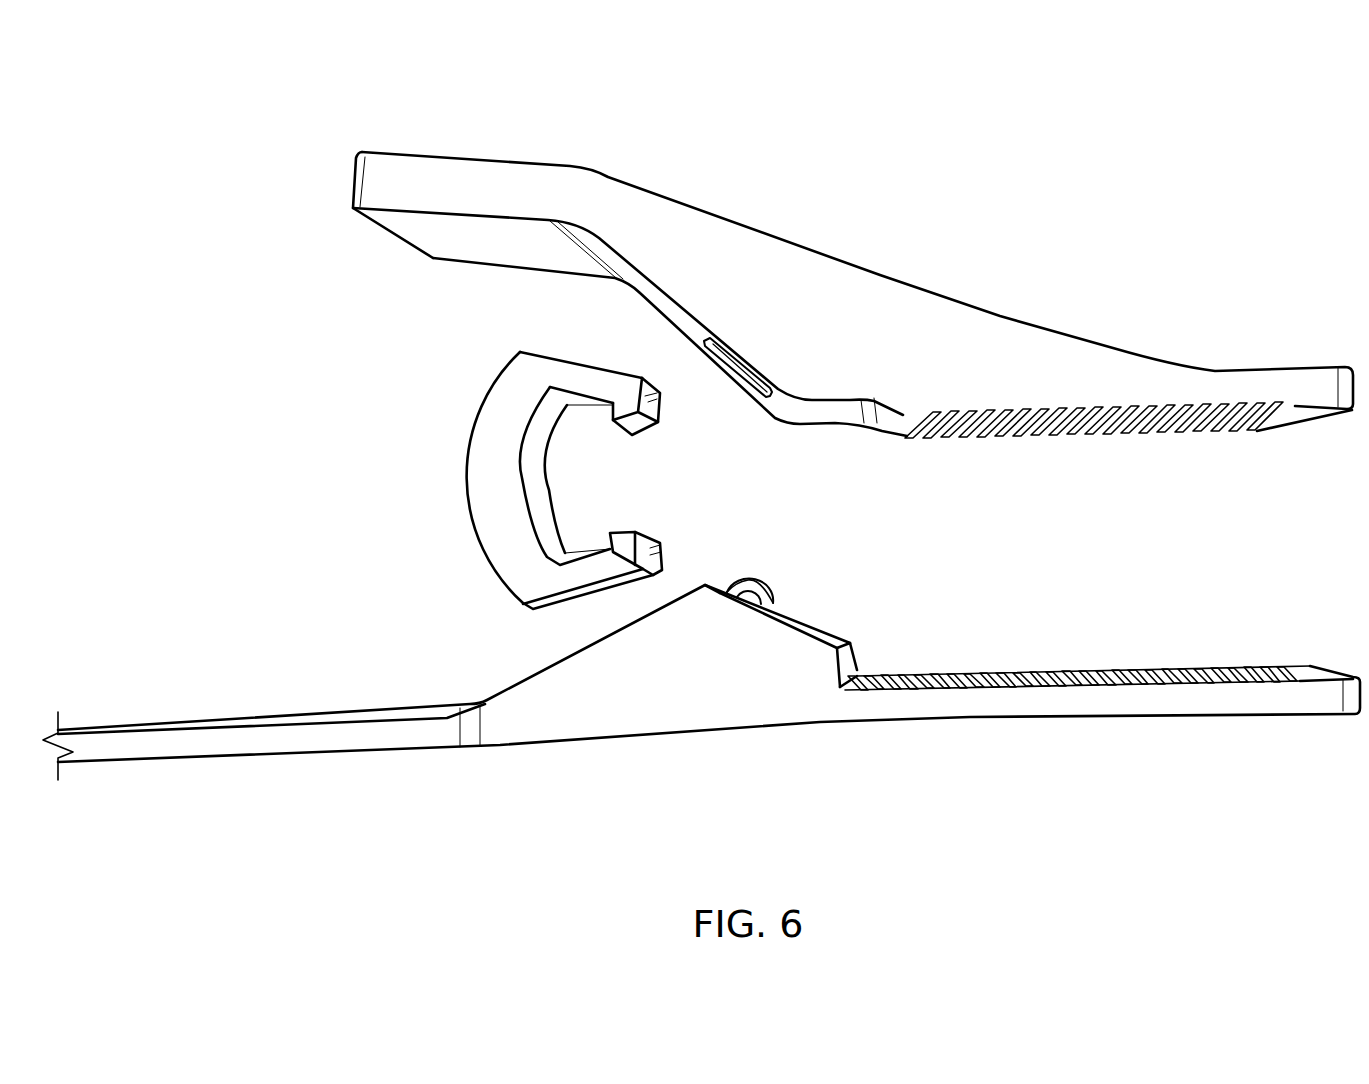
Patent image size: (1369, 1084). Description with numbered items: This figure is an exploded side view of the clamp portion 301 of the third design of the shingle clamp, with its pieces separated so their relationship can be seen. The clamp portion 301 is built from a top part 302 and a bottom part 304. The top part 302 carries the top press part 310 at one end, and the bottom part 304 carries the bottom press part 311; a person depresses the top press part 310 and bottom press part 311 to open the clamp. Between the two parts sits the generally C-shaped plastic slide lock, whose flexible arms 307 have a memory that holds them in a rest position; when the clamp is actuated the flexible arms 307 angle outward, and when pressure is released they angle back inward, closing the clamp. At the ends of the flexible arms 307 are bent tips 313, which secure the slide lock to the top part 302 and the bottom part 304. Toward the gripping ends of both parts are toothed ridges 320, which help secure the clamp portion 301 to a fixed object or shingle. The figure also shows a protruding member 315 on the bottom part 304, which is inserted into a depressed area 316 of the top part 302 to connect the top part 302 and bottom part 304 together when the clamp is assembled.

The clamp portion 301 is at (1228, 94).
The top part 302 is at (940, 293).
The bottom part 304 is at (970, 719).
The flexible arms 307 is at (583, 573).
The top press part 310 is at (474, 186).
The bottom press part 311 is at (313, 741).
The bent tips 313 is at (650, 397).
The protruding member 315 is at (770, 580).
The depressed area 316 is at (743, 374).
The toothed ridges 320 is at (1117, 422).